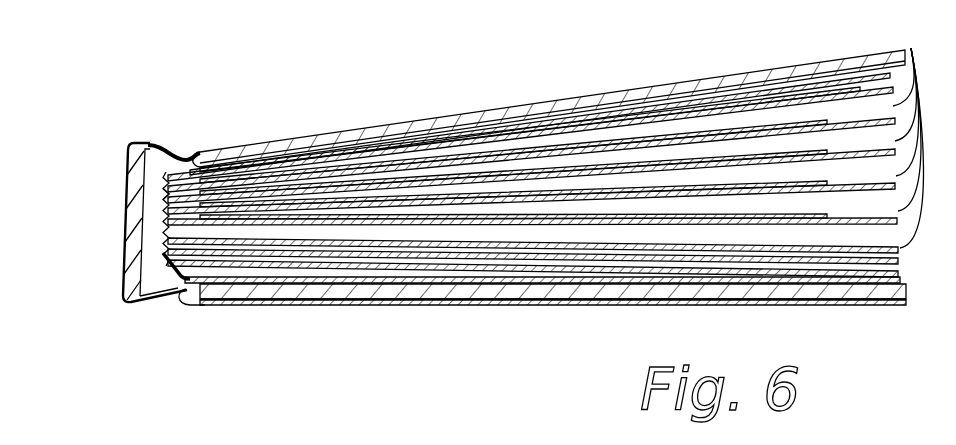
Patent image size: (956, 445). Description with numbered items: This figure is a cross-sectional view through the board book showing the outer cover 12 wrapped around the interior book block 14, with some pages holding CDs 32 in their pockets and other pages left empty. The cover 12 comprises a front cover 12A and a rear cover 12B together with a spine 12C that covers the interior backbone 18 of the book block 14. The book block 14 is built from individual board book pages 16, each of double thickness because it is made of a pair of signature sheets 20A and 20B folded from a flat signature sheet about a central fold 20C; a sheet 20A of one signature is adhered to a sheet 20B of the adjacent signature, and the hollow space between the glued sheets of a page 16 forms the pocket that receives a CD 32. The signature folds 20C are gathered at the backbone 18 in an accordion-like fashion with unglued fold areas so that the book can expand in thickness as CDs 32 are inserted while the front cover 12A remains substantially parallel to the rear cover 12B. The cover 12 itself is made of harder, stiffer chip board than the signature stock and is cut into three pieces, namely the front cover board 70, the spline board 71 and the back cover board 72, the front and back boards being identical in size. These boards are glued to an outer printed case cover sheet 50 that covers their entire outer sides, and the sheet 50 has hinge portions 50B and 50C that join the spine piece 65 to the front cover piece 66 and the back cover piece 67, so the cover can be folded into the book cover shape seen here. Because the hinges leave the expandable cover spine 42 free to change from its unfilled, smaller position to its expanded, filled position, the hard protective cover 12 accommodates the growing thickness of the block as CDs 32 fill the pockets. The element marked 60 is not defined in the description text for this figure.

The outer cover 12 is at (495, 203).
The front cover 12A is at (307, 156).
The rear cover 12B is at (300, 298).
The spine 12C is at (120, 235).
The interior book block 14 is at (236, 165).
The board book pages 16 is at (908, 136).
The interior backbone 18 is at (158, 197).
The signature sheet 20A is at (549, 88).
The signature sheet 20B is at (545, 336).
The central fold 20C is at (127, 207).
The CDs 32 is at (787, 120).
The expandable cover spine 42 is at (140, 280).
The case cover sheet 50 is at (590, 96).
The hinge portion 50B is at (172, 152).
The hinge portion 50C is at (170, 302).
The core of lower plate 60 is at (462, 302).
The spine piece 65 is at (137, 220).
The front cover piece 66 is at (387, 147).
The back cover piece 67 is at (518, 300).
The front cover board 70 is at (518, 117).
The spline board 71 is at (152, 193).
The back cover board 72 is at (410, 292).